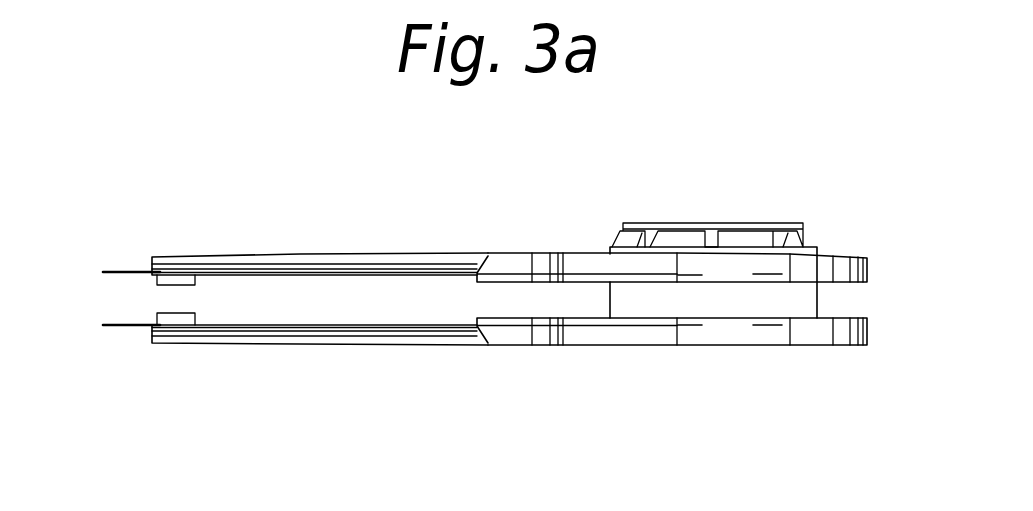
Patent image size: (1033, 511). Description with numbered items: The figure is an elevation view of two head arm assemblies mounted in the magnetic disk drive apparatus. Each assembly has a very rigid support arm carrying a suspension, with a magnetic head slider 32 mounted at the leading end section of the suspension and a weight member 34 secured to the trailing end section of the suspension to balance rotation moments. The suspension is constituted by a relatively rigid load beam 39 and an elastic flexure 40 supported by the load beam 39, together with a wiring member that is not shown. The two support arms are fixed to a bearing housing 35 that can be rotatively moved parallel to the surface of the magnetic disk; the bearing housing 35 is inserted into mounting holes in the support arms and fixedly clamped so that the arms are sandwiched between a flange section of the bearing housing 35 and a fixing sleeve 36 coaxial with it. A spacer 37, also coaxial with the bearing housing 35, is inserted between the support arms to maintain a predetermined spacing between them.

The magnetic head slider 32 is at (160, 284).
The weight member 34 is at (581, 260).
The bearing housing 35 is at (712, 232).
The fixing sleeve 36 is at (812, 244).
The spacer 37 is at (802, 300).
The load beam 39 is at (378, 265).
The flexure 40 is at (268, 265).